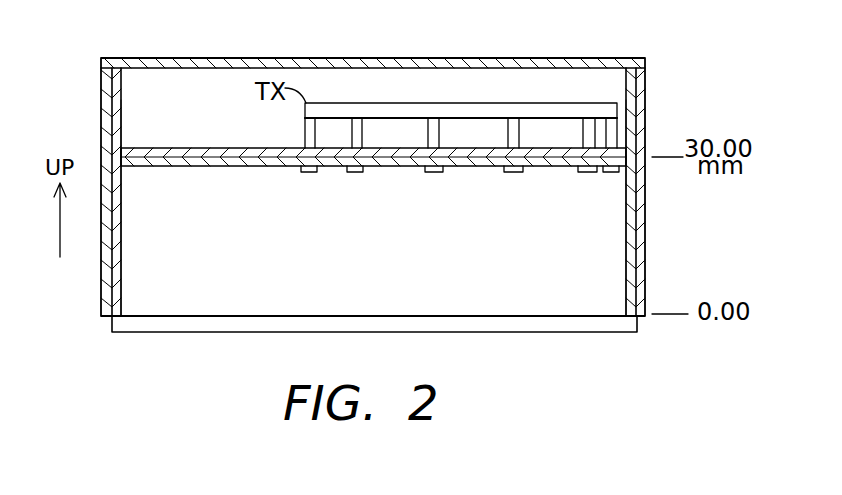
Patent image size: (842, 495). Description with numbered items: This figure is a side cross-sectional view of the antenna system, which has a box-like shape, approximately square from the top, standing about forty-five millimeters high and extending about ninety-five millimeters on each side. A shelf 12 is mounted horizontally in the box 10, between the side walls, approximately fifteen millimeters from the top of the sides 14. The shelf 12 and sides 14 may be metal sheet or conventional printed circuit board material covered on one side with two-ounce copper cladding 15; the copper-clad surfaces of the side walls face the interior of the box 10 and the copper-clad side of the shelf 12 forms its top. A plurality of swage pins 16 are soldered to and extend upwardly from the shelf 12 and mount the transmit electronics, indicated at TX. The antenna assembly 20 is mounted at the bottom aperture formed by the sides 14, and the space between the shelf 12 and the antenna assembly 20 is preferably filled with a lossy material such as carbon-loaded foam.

The box 10 is at (120, 58).
The shelf 12 is at (197, 167).
The sides 14 is at (101, 98).
The copper cladding 15 is at (207, 147).
The swage pins 16 is at (507, 137).
The antenna assembly 20 is at (487, 332).